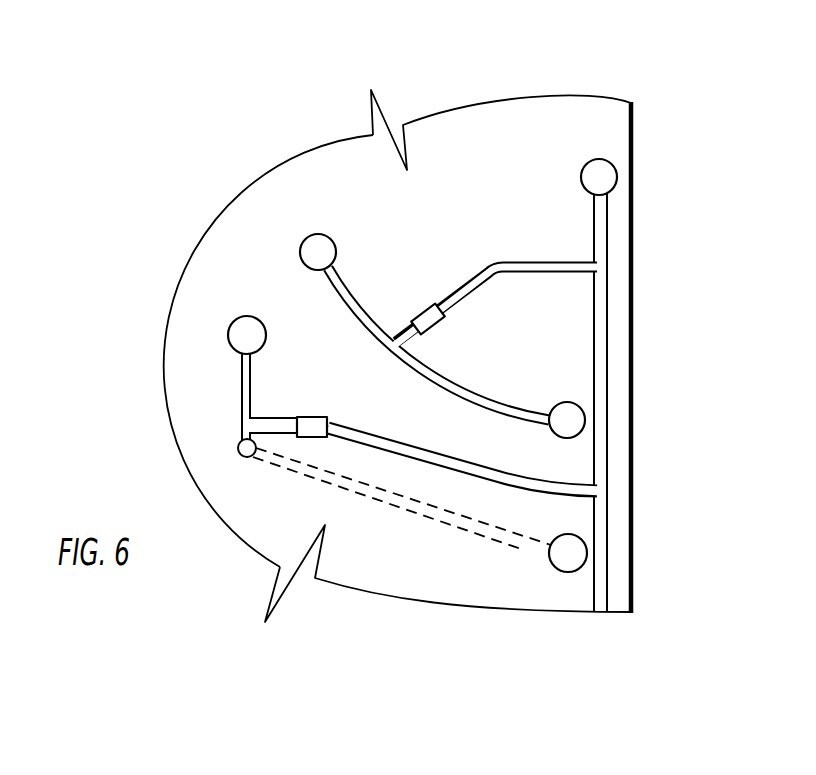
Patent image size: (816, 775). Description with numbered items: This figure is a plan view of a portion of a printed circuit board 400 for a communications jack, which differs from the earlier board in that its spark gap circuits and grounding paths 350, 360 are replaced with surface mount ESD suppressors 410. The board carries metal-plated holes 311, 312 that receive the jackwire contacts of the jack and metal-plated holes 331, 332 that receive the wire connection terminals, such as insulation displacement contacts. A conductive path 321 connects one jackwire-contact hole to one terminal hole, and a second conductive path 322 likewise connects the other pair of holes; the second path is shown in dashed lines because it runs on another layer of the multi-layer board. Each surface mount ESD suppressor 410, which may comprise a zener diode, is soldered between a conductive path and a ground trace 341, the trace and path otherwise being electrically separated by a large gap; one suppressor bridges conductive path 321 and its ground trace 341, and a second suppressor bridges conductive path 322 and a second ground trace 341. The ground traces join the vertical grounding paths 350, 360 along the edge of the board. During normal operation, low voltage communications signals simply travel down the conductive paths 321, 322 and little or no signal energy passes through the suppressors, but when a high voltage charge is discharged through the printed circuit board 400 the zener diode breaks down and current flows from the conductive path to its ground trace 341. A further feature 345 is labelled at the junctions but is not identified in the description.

The printed circuit board 400 is at (308, 93).
The metal-plated hole 311 is at (337, 244).
The metal-plated hole 312 is at (263, 346).
The conductive path 321 is at (485, 408).
The conductive path 322 is at (522, 553).
The metal-plated hole 331 is at (586, 421).
The metal-plated hole 332 is at (588, 556).
The ground trace 341 is at (466, 298).
The junction 345 is at (413, 323).
The grounding path 350 is at (608, 296).
The grounding path 360 is at (613, 189).
The surface mount ESD suppressor 410 is at (438, 338).